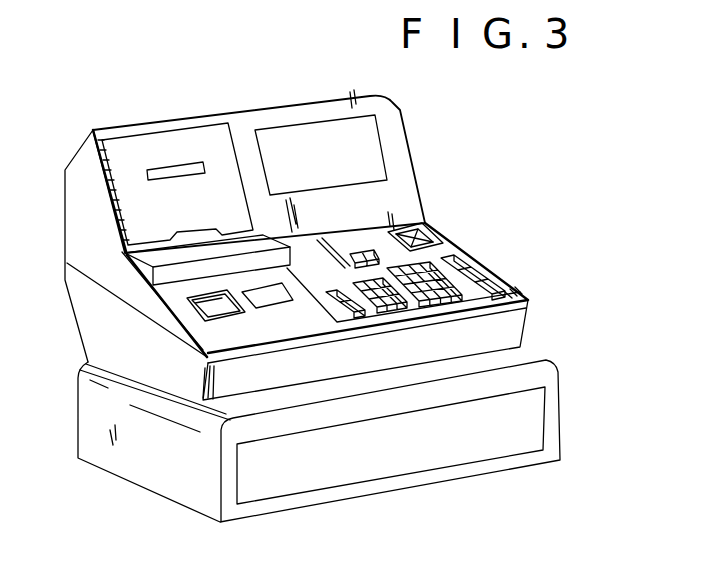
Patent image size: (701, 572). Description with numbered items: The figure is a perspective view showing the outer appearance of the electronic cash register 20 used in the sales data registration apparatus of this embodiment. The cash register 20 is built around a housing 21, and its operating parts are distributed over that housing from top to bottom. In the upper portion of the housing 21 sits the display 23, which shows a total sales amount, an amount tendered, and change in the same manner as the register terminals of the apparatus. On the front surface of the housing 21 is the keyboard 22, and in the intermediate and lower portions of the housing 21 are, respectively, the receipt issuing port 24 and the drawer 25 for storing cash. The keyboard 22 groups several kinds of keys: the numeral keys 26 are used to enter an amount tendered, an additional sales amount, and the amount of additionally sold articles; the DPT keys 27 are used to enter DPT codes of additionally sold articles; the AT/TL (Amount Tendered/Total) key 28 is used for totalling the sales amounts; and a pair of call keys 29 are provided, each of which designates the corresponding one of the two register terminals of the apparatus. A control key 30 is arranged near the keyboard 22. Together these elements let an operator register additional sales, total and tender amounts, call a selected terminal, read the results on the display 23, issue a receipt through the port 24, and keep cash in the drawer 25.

The electronic cash register 20 is at (359, 90).
The housing 21 is at (414, 172).
The keyboard 22 is at (530, 298).
The display 23 is at (370, 134).
The receipt issuing port 24 is at (188, 299).
The drawer 25 is at (425, 462).
The numeral keys 26 is at (398, 310).
The DPT keys 27 is at (455, 303).
The AT/TL key 28 is at (485, 279).
The call keys 29 is at (356, 251).
The control key 30 is at (430, 235).